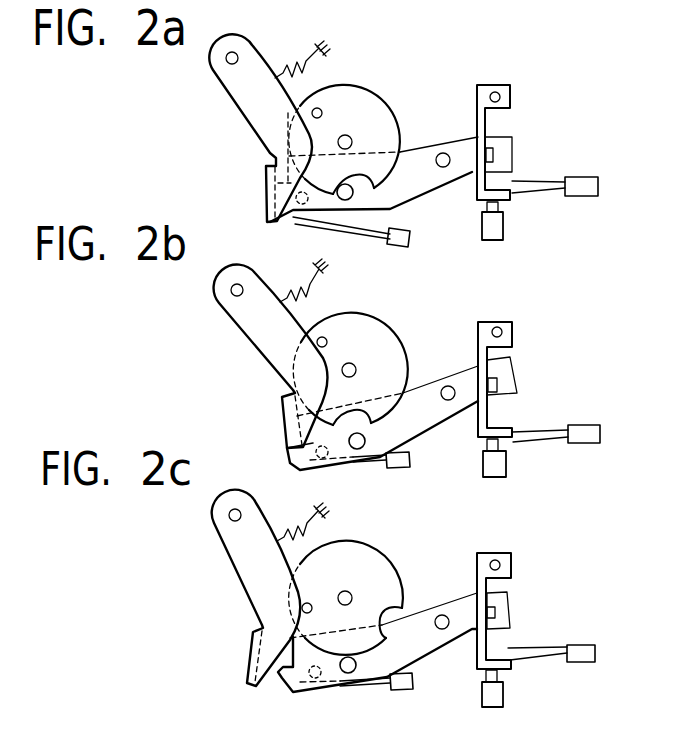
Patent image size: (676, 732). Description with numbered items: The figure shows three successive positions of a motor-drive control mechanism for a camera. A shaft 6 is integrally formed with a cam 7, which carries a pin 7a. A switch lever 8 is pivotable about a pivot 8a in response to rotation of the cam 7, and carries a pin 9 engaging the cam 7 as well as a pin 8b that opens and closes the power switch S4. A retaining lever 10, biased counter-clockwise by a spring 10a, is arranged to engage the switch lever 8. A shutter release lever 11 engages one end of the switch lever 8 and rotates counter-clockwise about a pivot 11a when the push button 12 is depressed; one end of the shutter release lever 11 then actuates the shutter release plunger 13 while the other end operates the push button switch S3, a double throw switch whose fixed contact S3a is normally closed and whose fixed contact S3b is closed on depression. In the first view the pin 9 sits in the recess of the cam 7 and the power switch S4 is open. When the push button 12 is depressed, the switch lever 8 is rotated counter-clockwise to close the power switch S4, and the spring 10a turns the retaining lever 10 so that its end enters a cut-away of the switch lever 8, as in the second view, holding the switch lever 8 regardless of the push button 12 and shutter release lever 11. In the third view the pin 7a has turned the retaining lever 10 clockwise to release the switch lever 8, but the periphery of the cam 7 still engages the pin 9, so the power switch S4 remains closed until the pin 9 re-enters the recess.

In FIG. 2A, the shaft 6 is at (353, 143).
In FIG. 2A, the cam 7 is at (384, 99).
In FIG. 2A, the pin 7a is at (323, 112).
In FIG. 2A, the switch lever 8 is at (460, 137).
In FIG. 2A, the pivot 8a is at (443, 153).
In FIG. 2A, the pin 8b is at (303, 228).
In FIG. 2B, the pin 8b is at (300, 441).
In FIG. 2C, the pin 8b is at (303, 680).
In FIG. 2A, the pin 9 is at (341, 186).
In FIG. 2A, the retaining lever 10 is at (236, 100).
In FIG. 2B, the retaining lever 10 is at (271, 356).
In FIG. 2C, the retaining lever 10 is at (256, 588).
In FIG. 2A, the spring 10a is at (297, 60).
In FIG. 2B, the spring 10a is at (305, 288).
In FIG. 2C, the spring 10a is at (284, 528).
In FIG. 2A, the shutter release lever 11 is at (512, 95).
In FIG. 2B, the shutter release lever 11 is at (514, 330).
In FIG. 2C, the shutter release lever 11 is at (513, 561).
In FIG. 2A, the pivot 11a is at (494, 152).
In FIG. 2B, the pivot 11a is at (498, 382).
In FIG. 2C, the pivot 11a is at (496, 614).
In FIG. 2A, the push button 12 is at (482, 226).
In FIG. 2B, the push button 12 is at (508, 465).
In FIG. 2C, the push button 12 is at (482, 700).
In FIG. 2A, the shutter release plunger 13 is at (495, 91).
In FIG. 2B, the shutter release plunger 13 is at (497, 327).
In FIG. 2C, the shutter release plunger 13 is at (494, 560).
In FIG. 2A, the push button switch S3 is at (587, 197).
In FIG. 2B, the push button switch S3 is at (592, 444).
In FIG. 2C, the push button switch S3 is at (577, 644).
In FIG. 2A, the fixed contact S3a is at (533, 193).
In FIG. 2A, the fixed contact S3b is at (535, 178).
In FIG. 2A, the power switch S4 is at (398, 248).
In FIG. 2B, the power switch S4 is at (410, 461).
In FIG. 2C, the power switch S4 is at (396, 691).